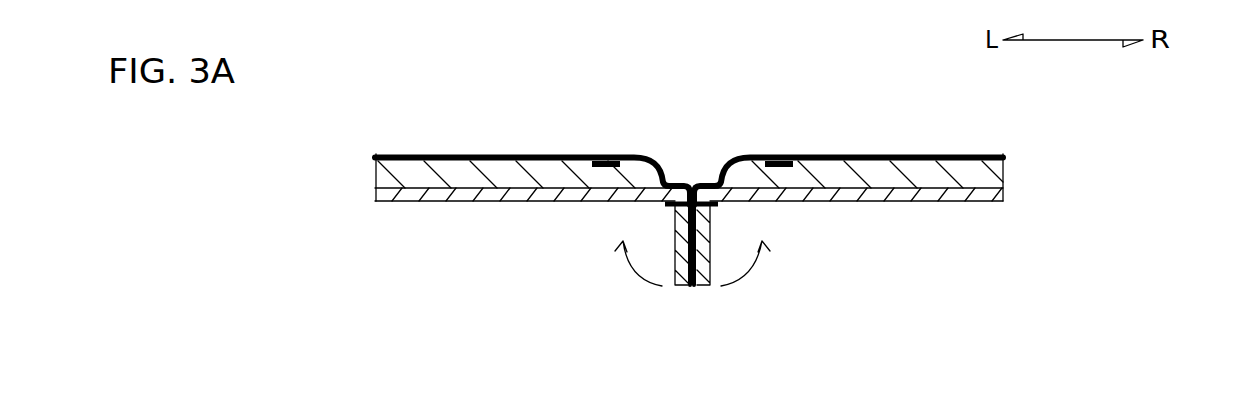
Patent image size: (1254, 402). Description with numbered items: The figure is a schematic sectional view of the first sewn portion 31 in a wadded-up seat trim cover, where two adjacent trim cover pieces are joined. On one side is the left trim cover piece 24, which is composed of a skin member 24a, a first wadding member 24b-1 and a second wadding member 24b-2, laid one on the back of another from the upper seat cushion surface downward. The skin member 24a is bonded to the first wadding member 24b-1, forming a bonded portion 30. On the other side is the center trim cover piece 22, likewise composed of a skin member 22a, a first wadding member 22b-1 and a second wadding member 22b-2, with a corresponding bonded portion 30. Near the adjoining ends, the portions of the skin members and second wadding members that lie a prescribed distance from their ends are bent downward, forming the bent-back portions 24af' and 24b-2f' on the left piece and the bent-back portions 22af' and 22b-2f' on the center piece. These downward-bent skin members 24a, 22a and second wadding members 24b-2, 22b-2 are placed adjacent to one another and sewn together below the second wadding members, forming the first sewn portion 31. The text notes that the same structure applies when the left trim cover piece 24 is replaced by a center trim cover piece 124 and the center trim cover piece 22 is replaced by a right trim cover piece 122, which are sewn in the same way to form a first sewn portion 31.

The left trim cover piece 24 is at (262, 128).
The center trim cover piece 124 is at (446, 194).
The skin member 24a is at (374, 157).
The first wadding member 24b-1 is at (379, 178).
The second wadding member 24b-2 is at (375, 197).
The center trim cover piece 22 is at (1153, 122).
The right trim cover piece 122 is at (959, 181).
The skin member 22a is at (1005, 157).
The first wadding member 22b-1 is at (1005, 180).
The second wadding member 22b-2 is at (1005, 197).
The bonded portion 30 is at (607, 158).
The first sewn portion 31 is at (718, 209).
The bent-back portion 24b-2f' is at (610, 274).
The bent-back portion 24af' is at (634, 291).
The bent-back portion 22af' is at (758, 291).
The bent-back portion 22b-2f' is at (782, 274).